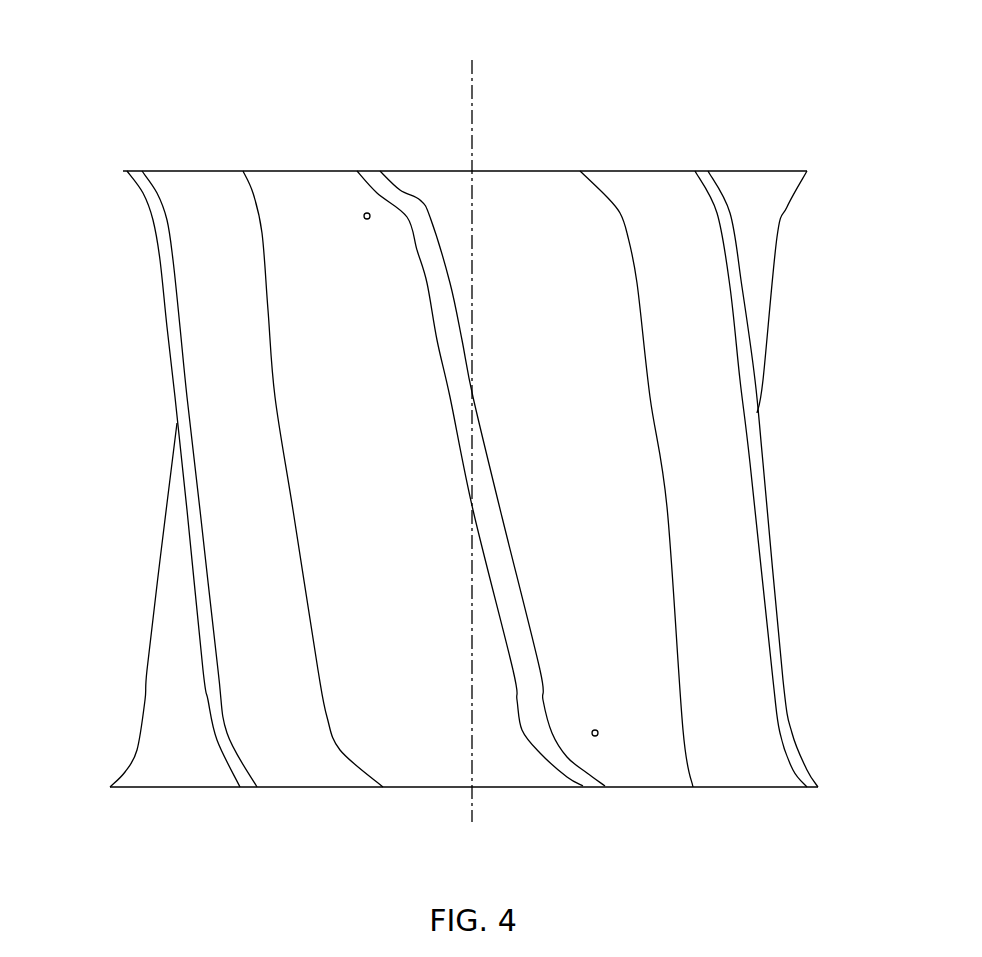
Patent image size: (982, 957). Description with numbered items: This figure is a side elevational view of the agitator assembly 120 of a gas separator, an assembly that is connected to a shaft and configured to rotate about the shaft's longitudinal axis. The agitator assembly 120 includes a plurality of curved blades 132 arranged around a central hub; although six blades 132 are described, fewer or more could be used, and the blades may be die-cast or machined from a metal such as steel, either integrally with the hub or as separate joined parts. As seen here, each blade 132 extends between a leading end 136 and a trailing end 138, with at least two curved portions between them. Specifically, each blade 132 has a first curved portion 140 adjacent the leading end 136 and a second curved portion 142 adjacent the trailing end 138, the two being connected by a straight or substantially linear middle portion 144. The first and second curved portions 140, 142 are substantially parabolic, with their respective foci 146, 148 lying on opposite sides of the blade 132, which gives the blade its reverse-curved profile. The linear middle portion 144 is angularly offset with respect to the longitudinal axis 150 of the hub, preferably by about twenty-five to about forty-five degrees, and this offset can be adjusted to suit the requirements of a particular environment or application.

The agitator assembly 120 is at (457, 464).
The curved blade 132 is at (457, 482).
The leading end 136 is at (352, 788).
The trailing end 138 is at (222, 171).
The first curved portion 140 is at (280, 752).
The second curved portion 142 is at (235, 213).
The linear middle portion 144 is at (502, 517).
The focus of first curved portion 146 is at (596, 728).
The focus of second curved portion 148 is at (367, 217).
The longitudinal axis 150 is at (473, 85).